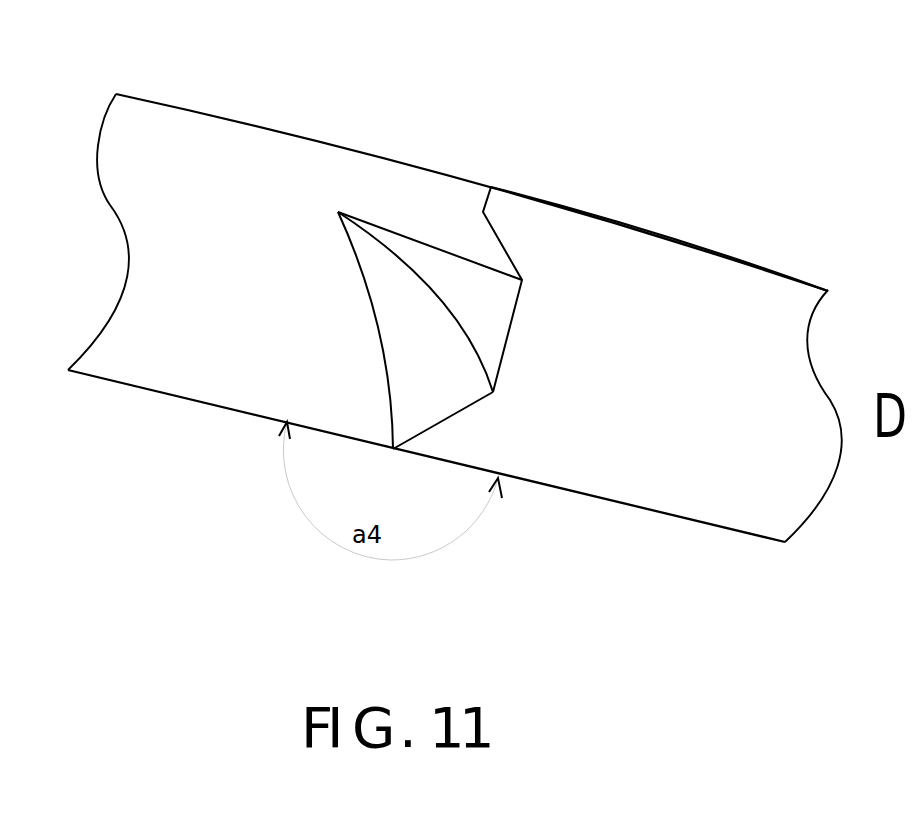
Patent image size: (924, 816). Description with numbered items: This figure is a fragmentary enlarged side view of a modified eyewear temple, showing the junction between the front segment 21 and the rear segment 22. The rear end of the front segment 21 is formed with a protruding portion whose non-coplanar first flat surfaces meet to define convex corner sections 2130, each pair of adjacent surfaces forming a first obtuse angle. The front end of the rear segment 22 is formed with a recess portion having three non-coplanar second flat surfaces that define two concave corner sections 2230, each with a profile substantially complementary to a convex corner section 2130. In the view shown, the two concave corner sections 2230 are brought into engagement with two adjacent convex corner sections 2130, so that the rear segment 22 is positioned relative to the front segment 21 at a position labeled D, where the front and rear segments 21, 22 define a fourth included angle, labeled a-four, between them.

The front segment 21 is at (158, 137).
The rear segment 22 is at (755, 280).
The convex corner section 2130 is at (411, 312).
The concave corner section 2230 is at (522, 280).